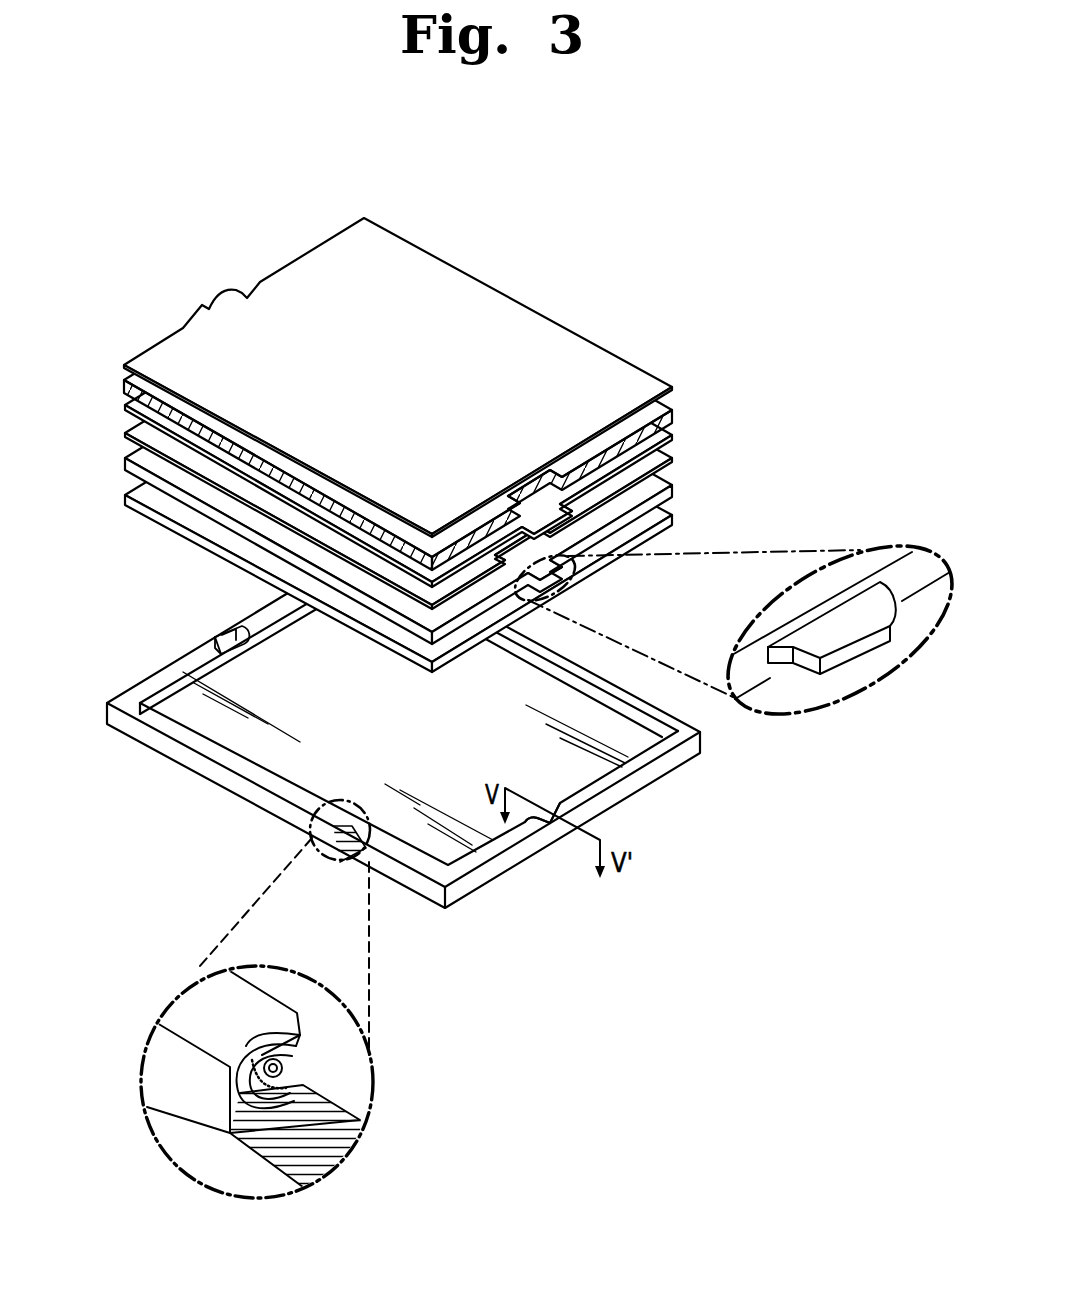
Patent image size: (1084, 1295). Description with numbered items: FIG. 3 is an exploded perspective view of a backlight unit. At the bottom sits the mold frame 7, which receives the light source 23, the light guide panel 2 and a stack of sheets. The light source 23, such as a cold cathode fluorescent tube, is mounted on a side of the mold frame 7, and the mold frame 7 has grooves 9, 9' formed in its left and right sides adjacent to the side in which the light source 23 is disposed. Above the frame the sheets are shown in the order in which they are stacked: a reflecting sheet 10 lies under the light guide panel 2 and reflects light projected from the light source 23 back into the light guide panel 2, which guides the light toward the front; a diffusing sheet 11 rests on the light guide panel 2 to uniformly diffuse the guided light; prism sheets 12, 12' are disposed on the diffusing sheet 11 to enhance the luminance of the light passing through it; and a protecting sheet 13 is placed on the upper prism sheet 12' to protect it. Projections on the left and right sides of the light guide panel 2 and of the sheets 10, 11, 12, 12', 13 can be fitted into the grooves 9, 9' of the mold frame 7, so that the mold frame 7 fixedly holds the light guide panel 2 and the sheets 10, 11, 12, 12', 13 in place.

The light guide panel 2 is at (668, 485).
The mold frame 7 is at (668, 782).
The groove 9 is at (542, 858).
The groove 9' is at (192, 632).
The reflecting sheet 10 is at (668, 517).
The diffusing sheet 11 is at (668, 454).
The prism sheet 12 is at (438, 422).
The prism sheet 12' is at (442, 401).
The protecting sheet 13 is at (627, 381).
The light source 23 is at (303, 1087).